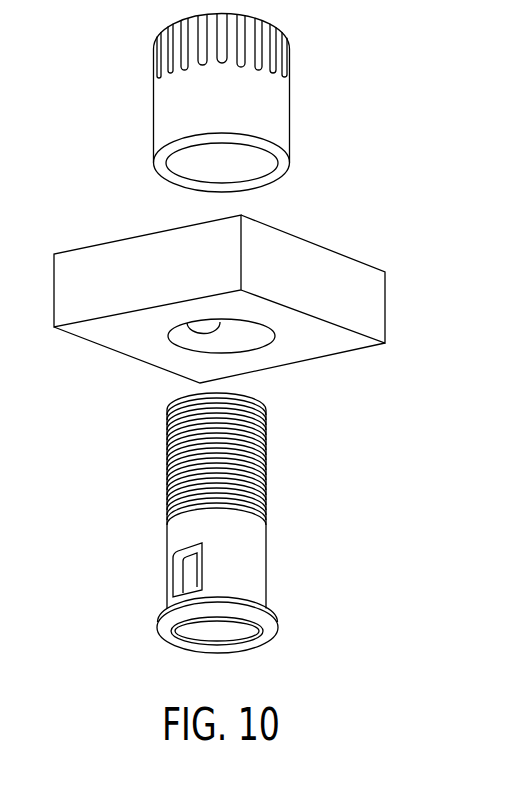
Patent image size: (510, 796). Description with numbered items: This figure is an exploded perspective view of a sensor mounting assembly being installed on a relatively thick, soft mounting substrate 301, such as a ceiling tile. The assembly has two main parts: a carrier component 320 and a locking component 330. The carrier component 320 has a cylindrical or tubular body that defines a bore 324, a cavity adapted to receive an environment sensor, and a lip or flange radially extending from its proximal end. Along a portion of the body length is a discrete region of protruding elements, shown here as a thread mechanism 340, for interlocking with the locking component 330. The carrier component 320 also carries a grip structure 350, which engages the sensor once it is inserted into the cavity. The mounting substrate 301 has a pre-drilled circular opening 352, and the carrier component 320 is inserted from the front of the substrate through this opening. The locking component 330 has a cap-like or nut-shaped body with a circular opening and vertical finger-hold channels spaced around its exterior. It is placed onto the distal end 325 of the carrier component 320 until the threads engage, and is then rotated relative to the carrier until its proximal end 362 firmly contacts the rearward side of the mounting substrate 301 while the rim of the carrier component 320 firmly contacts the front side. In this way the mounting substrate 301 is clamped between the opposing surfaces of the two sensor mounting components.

The mounting substrate 301 is at (208, 304).
The carrier component 320 is at (196, 531).
The bore 324 is at (193, 618).
The distal end 325 is at (238, 392).
The locking component 330 is at (165, 108).
The thread mechanism 340 is at (167, 447).
The grip structure 350 is at (186, 569).
The pre-drilled circular opening 352 is at (187, 323).
The proximal end 362 is at (180, 152).